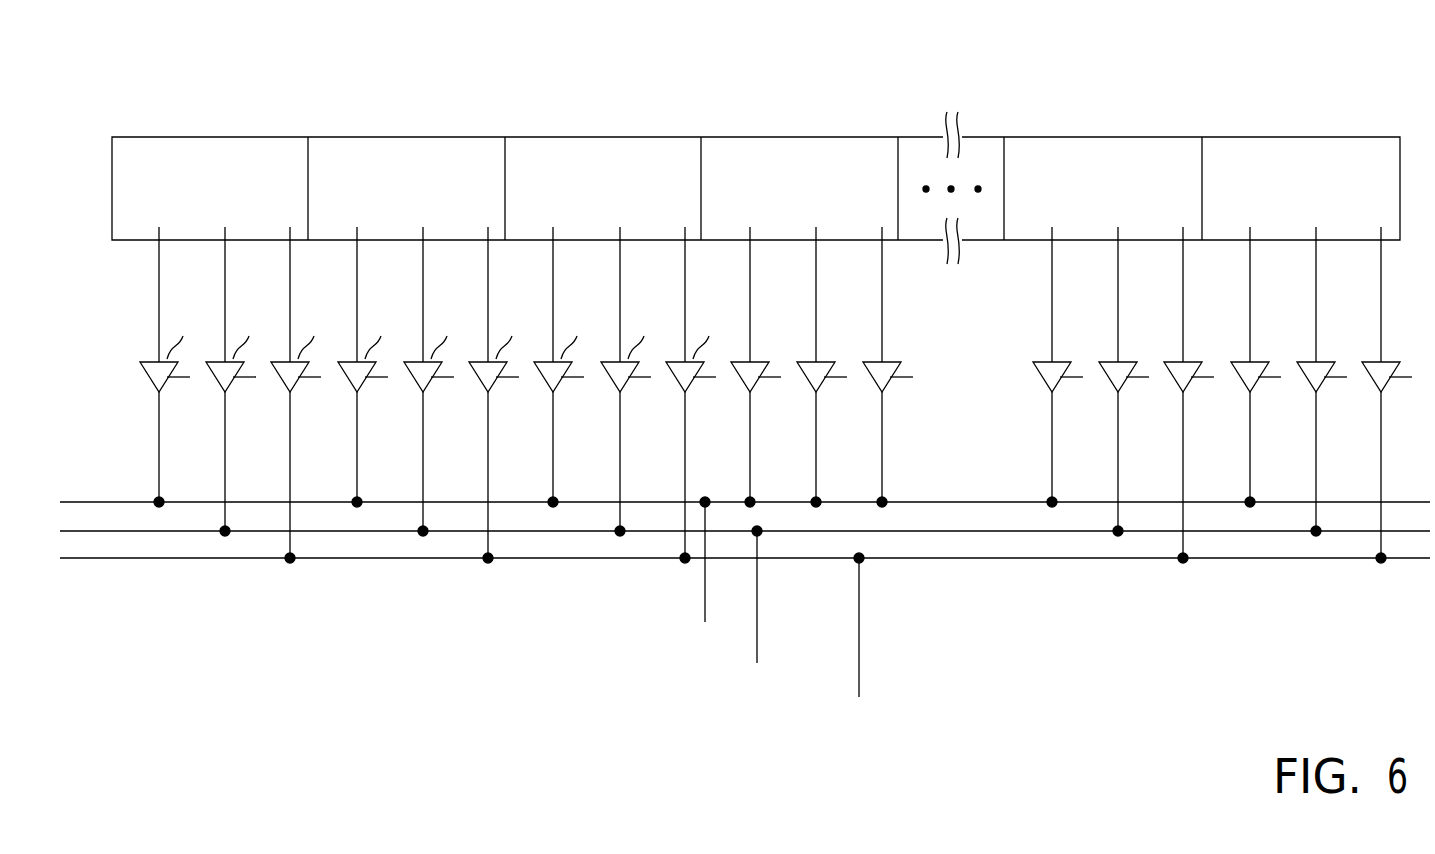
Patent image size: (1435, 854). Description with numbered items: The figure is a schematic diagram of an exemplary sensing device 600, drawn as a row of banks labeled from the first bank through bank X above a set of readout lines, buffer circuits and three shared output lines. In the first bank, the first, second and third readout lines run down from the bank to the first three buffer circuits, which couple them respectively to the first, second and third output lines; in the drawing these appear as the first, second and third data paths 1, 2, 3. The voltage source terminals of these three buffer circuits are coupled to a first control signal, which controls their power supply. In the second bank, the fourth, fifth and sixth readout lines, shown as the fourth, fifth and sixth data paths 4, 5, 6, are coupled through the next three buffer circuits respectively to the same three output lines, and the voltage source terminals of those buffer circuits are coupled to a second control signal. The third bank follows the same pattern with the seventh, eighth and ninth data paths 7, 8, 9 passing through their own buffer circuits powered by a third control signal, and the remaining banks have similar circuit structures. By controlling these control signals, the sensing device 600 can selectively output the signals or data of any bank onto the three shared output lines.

The sensing device 600 is at (120, 79).
The data path 1 (Data[1], buffer BF1) 1 is at (149, 367).
The data path 2 (Data[2], buffer BF2) 2 is at (228, 381).
The data path 3 (Data[3], buffer BF3) 3 is at (293, 395).
The data path 4 (Data[4], buffer BF4) 4 is at (360, 367).
The data path 5 (Data[5], buffer BF5) 5 is at (426, 381).
The data path 6 (Data[6], buffer BF6) 6 is at (491, 395).
The data path 7 (Data[7], buffer BF7) 7 is at (556, 367).
The data path 8 (Data[8], buffer BF8) 8 is at (623, 381).
The data path 9 (Data[9], buffer BF9) 9 is at (688, 395).